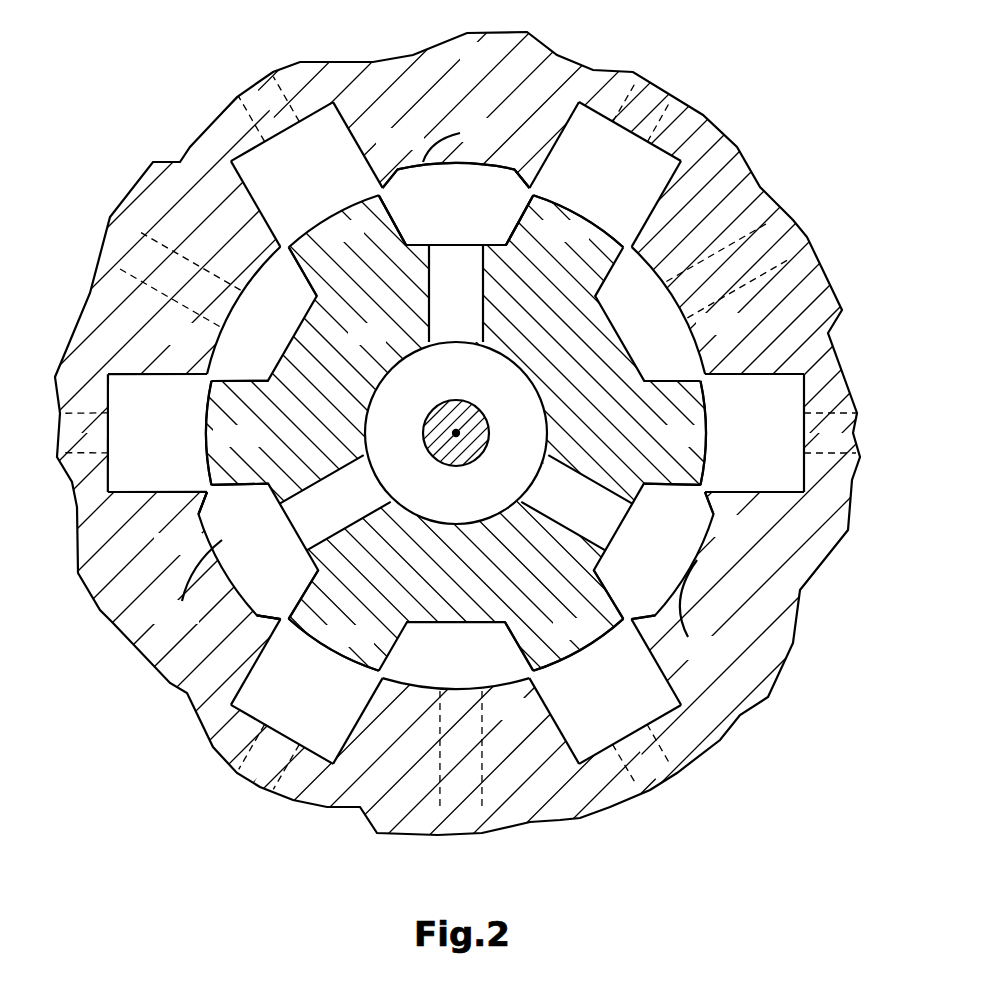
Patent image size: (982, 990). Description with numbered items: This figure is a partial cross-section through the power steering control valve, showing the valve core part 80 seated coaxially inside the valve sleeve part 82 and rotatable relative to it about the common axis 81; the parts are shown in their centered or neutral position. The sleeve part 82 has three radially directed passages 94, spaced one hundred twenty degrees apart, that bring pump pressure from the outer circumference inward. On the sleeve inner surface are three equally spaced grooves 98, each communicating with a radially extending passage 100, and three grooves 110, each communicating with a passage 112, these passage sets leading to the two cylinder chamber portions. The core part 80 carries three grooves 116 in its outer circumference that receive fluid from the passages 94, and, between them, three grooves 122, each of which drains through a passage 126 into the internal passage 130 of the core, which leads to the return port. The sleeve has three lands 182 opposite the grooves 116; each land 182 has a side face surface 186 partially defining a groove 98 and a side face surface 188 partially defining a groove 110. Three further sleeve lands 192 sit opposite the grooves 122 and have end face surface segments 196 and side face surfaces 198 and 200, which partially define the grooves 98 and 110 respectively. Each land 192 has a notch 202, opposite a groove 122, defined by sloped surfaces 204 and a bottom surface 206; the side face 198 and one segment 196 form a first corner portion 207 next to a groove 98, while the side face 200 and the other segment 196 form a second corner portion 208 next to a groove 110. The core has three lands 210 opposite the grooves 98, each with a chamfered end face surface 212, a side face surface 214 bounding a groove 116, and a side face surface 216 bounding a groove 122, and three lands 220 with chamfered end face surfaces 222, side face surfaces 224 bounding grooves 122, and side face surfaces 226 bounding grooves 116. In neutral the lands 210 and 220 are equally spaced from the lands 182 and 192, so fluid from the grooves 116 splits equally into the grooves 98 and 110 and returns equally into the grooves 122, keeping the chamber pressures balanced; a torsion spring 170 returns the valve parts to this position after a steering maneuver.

The valve core part 80 is at (351, 343).
The common axis 81 is at (460, 434).
The valve sleeve part 82 is at (462, 61).
The radially directed passages 94 is at (125, 250).
The axially extending grooves 98 is at (337, 100).
The radially extending passages 100 is at (268, 100).
The axially extending grooves 110 is at (690, 170).
The passages 112 is at (647, 83).
The axially extending grooves 116 is at (249, 333).
The axially extending grooves 122 is at (439, 238).
The passages 126 is at (434, 303).
The internal passage 130 is at (439, 508).
The torsion spring 170 is at (473, 397).
The axially extending lands 182 is at (164, 343).
The side face surface 186 is at (246, 184).
The side face surface 188 is at (670, 180).
The axially extending lands 192 is at (379, 148).
The end face surface segments 196 is at (268, 490).
The side face surface 198 is at (357, 150).
The side face surface 200 is at (568, 120).
The notch 202 is at (423, 162).
The sloped surfaces 204 is at (518, 180).
The bottom surface 206 is at (490, 171).
The first corner portion 207 is at (380, 186).
The second corner portion 208 is at (531, 186).
The axially extending lands 210 is at (319, 240).
The end face surface 212 is at (712, 420).
The side face surface 214 is at (293, 252).
The side face surface 216 is at (421, 252).
The axially extending lands 220 is at (544, 240).
The end face surface 222 is at (621, 240).
The side face surface 224 is at (502, 250).
The side face surface 226 is at (218, 378).